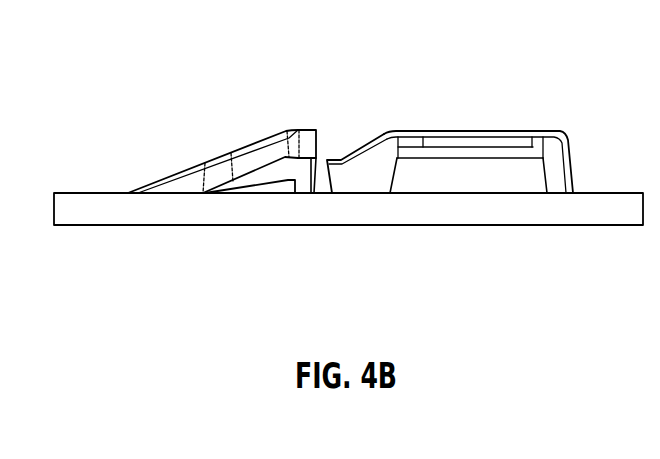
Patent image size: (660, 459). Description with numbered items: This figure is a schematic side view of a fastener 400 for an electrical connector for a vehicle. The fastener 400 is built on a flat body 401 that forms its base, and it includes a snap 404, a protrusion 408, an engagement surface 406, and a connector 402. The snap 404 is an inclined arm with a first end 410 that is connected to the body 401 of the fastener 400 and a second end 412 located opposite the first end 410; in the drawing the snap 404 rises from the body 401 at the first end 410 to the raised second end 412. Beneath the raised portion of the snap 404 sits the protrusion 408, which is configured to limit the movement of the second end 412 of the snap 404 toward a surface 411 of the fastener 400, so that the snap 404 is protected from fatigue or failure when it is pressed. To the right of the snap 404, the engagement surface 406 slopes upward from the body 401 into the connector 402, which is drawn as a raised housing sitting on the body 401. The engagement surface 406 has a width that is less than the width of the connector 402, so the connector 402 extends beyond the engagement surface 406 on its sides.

The fastener 400 is at (583, 62).
The body 401 is at (593, 187).
The connector 402 is at (475, 125).
The snap 404 is at (245, 146).
The engagement surface 406 is at (361, 142).
The protrusion 408 is at (279, 196).
The first end 410 is at (155, 184).
The surface 411 is at (316, 192).
The second end 412 is at (305, 128).